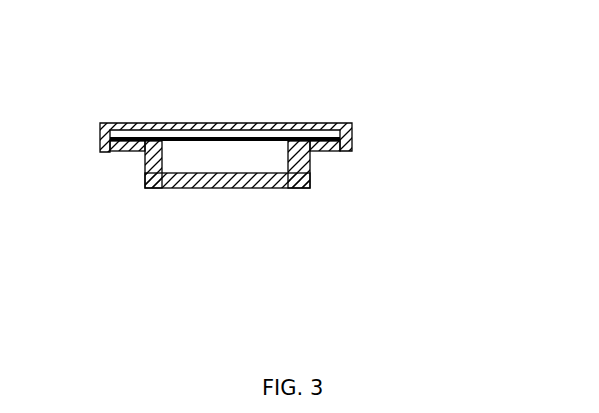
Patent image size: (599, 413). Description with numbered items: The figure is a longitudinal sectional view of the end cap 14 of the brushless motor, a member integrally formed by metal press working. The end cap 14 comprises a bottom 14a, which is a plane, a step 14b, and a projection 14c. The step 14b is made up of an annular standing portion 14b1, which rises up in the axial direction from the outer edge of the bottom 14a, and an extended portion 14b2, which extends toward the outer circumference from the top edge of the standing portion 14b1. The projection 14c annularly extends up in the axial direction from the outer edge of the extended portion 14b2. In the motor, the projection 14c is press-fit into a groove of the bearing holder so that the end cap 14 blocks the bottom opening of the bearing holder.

The end cap 14 is at (138, 112).
The bottom 14a is at (212, 188).
The step 14b is at (497, 165).
The standing portion 14b1 is at (310, 172).
The extended portion 14b2 is at (310, 152).
The projection 14c is at (353, 127).